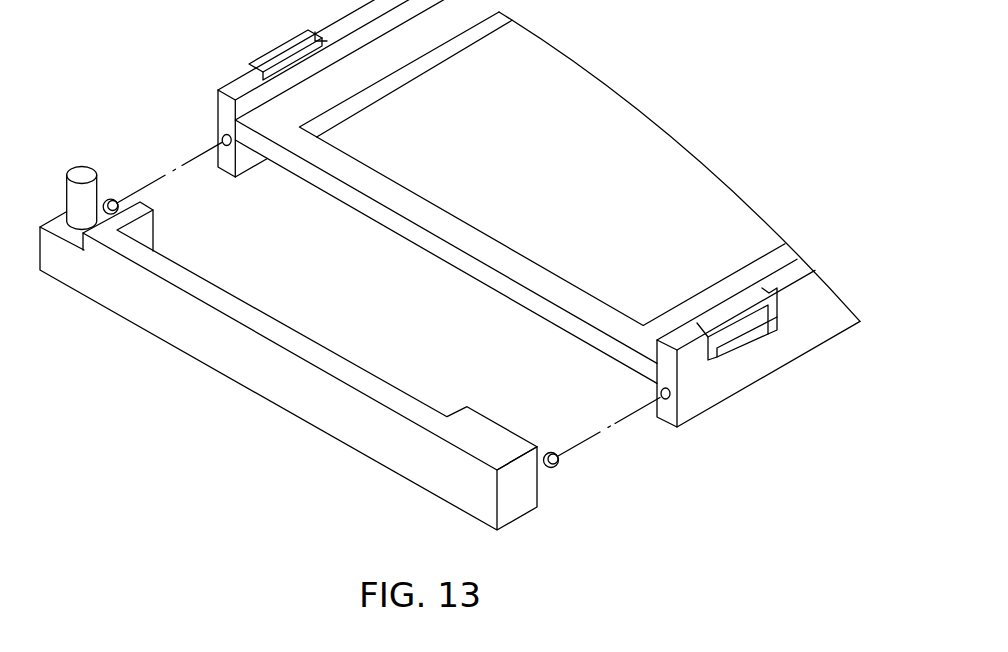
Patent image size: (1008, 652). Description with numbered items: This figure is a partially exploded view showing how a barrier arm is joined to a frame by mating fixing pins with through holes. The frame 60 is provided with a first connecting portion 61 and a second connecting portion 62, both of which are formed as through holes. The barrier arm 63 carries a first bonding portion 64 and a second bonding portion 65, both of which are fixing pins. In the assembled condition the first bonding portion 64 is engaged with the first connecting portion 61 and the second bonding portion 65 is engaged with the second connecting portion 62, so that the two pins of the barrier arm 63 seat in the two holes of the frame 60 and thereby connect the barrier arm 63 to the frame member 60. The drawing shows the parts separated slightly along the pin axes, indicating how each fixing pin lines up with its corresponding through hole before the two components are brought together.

The frame 60 is at (806, 338).
The first connecting portion 61 is at (221, 140).
The second connecting portion 62 is at (677, 394).
The barrier arm 63 is at (277, 392).
The first bonding portion 64 is at (110, 198).
The second bonding portion 65 is at (559, 467).